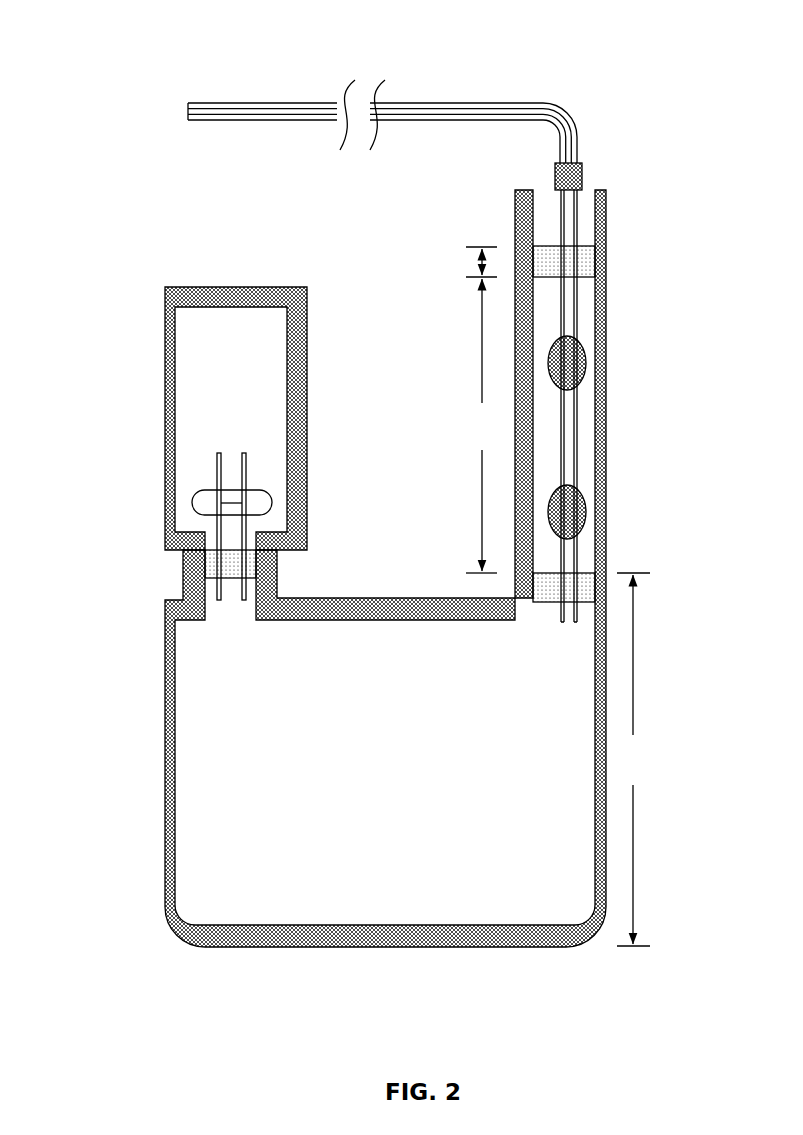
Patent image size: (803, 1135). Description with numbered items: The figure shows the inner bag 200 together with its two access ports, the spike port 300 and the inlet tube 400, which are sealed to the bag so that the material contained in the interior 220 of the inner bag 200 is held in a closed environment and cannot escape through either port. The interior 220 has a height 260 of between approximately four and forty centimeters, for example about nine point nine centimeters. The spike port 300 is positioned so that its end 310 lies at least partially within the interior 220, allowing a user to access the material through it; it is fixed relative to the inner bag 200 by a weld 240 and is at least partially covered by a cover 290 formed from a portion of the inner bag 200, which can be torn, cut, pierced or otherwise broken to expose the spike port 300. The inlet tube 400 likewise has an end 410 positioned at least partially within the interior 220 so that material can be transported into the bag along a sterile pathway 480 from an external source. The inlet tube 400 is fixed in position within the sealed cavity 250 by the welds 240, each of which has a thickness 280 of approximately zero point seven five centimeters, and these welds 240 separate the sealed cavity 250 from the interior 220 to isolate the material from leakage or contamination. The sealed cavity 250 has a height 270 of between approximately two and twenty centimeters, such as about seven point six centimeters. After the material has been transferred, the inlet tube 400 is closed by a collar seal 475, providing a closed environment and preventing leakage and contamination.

The inner bag 200 is at (164, 775).
The interior 220 is at (420, 790).
The weld 240 is at (182, 569).
The sealed cavity 250 is at (591, 310).
The height 260 is at (638, 759).
The height 270 is at (485, 426).
The thickness 280 is at (478, 264).
The cover 290 is at (187, 283).
The spike port 300 is at (229, 439).
The end 310 is at (232, 608).
The inlet tube 400 is at (571, 425).
The end 410 is at (568, 625).
The collar seal 475 is at (585, 162).
The sterile pathway 480 is at (229, 99).